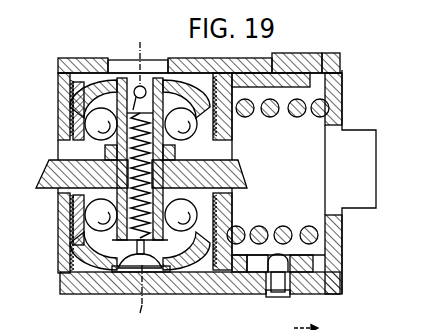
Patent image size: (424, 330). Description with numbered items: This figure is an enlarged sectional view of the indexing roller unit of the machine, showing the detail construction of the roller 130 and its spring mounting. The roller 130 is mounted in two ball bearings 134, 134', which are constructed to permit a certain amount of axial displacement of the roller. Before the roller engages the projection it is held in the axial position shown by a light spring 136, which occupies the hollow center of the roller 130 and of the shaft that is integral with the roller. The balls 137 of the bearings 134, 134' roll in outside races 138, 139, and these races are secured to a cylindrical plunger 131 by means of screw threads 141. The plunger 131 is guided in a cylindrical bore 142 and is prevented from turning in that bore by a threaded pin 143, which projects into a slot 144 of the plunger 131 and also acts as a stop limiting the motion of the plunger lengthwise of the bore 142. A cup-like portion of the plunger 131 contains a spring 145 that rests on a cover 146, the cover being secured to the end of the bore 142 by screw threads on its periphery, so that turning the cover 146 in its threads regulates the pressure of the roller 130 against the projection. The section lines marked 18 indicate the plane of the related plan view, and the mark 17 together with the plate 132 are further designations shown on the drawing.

The roller 130 is at (52, 170).
The cylindrical plunger 131 is at (280, 54).
The top plate 132 is at (86, 62).
The ball bearing 134 is at (108, 169).
The ball bearing 134' is at (115, 101).
The light spring 136 is at (110, 258).
The balls 137 is at (183, 216).
The outside race 138 is at (58, 131).
The outside race 139 is at (78, 234).
The screw threads 141 is at (58, 74).
The cylindrical bore 142 is at (328, 55).
The threaded pin 143 is at (279, 268).
The slot 144 is at (258, 266).
The spring 145 is at (270, 112).
The cover 146 is at (336, 229).
The section lines 18— 18 is at (160, 42).
The section line 17- 17 is at (290, 322).